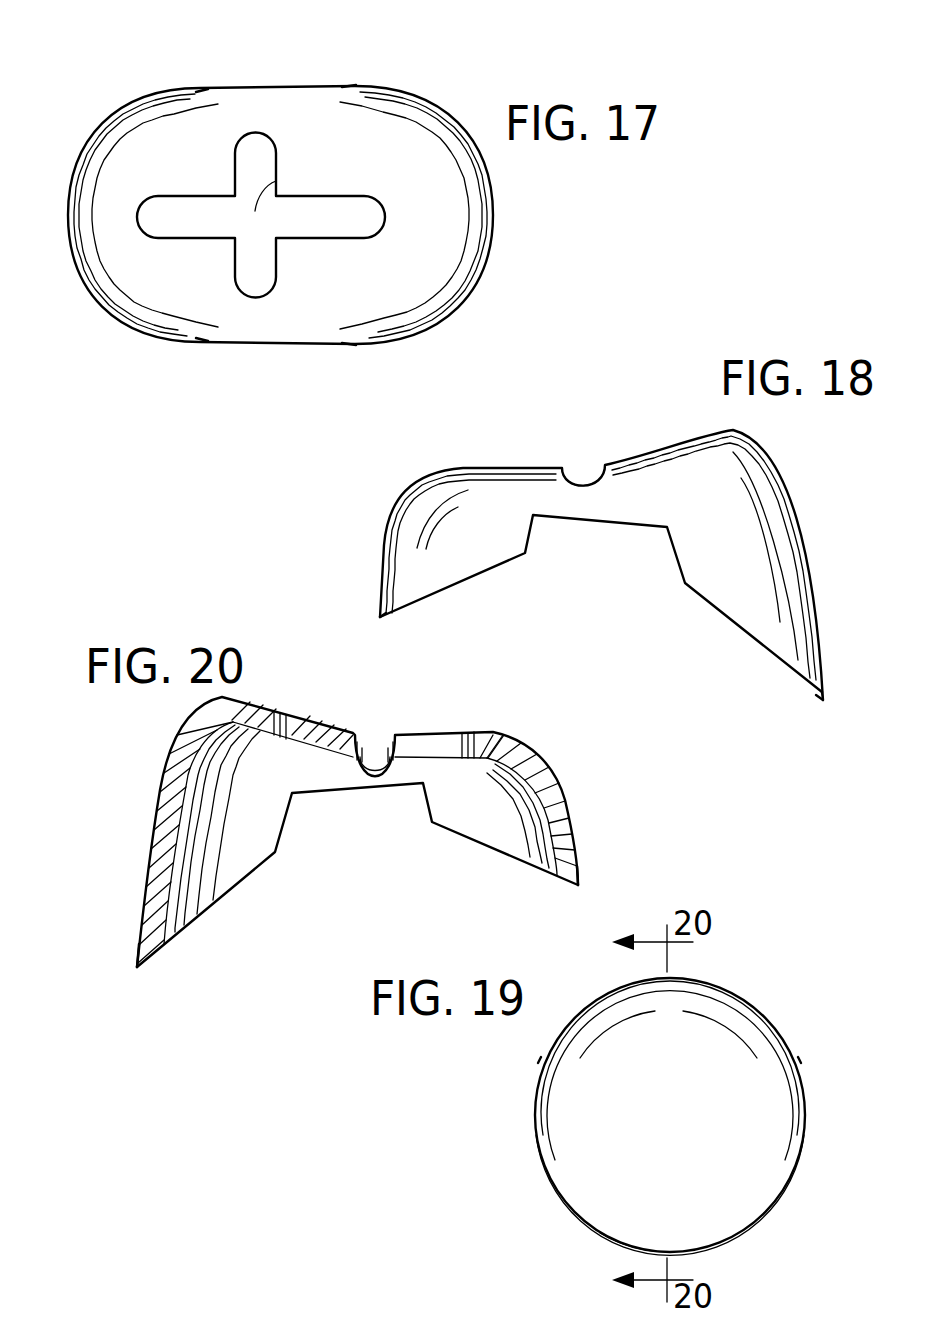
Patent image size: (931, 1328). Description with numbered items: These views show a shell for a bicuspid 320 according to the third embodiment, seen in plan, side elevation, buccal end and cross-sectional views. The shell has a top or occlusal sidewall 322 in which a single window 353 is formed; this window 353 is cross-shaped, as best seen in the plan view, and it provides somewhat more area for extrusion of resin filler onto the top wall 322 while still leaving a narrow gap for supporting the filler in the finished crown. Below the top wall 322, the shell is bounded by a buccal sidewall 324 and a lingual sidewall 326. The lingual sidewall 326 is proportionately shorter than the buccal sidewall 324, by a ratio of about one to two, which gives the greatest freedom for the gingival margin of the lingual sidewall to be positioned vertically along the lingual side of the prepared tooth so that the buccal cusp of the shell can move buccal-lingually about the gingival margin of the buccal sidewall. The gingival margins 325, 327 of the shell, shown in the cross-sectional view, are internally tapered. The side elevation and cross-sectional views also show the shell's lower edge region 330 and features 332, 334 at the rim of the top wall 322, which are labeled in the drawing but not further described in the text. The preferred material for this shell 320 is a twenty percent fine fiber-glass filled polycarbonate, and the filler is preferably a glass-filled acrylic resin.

In FIG. 17, the shell for a bicuspid 320 is at (312, 68).
In FIG. 18, the shell for a bicuspid 320 is at (477, 447).
In FIG. 20, the shell for a bicuspid 320 is at (455, 704).
In FIG. 19, the shell for a bicuspid 320 is at (748, 988).
In FIG. 17, the top or occlusal sidewall 322 is at (214, 186).
In FIG. 18, the top or occlusal sidewall 322 is at (668, 447).
In FIG. 19, the top or occlusal sidewall 322 is at (612, 993).
In FIG. 17, the buccal sidewall 324 is at (487, 220).
In FIG. 18, the buccal sidewall 324 is at (676, 566).
In FIG. 20, the buccal sidewall 324 is at (153, 810).
In FIG. 19, the buccal sidewall 324 is at (644, 1183).
In FIG. 18, the gingival margin of the buccal sidewall 325 is at (824, 688).
In FIG. 20, the gingival margin of the buccal sidewall 325 is at (142, 955).
In FIG. 19, the gingival margin of the buccal sidewall 325 is at (600, 1233).
In FIG. 17, the lingual sidewall 326 is at (68, 208).
In FIG. 18, the lingual sidewall 326 is at (383, 544).
In FIG. 20, the lingual sidewall 326 is at (568, 782).
In FIG. 18, the gingival margin of the lingual sidewall 327 is at (380, 610).
In FIG. 20, the gingival margin of the lingual sidewall 327 is at (582, 876).
In FIG. 18, the bottom edge / cutout 330 is at (744, 571).
In FIG. 20, the bottom edge / cutout 330 is at (264, 856).
In FIG. 17, the bottom rim lip 332 is at (331, 358).
In FIG. 19, the bottom rim lip 332 is at (818, 1089).
In FIG. 17, the top rim lip 334 is at (238, 77).
In FIG. 19, the top rim lip 334 is at (527, 1076).
In FIG. 17, the window 353 is at (304, 197).
In FIG. 18, the window 353 is at (598, 465).
In FIG. 20, the window 353 is at (309, 733).